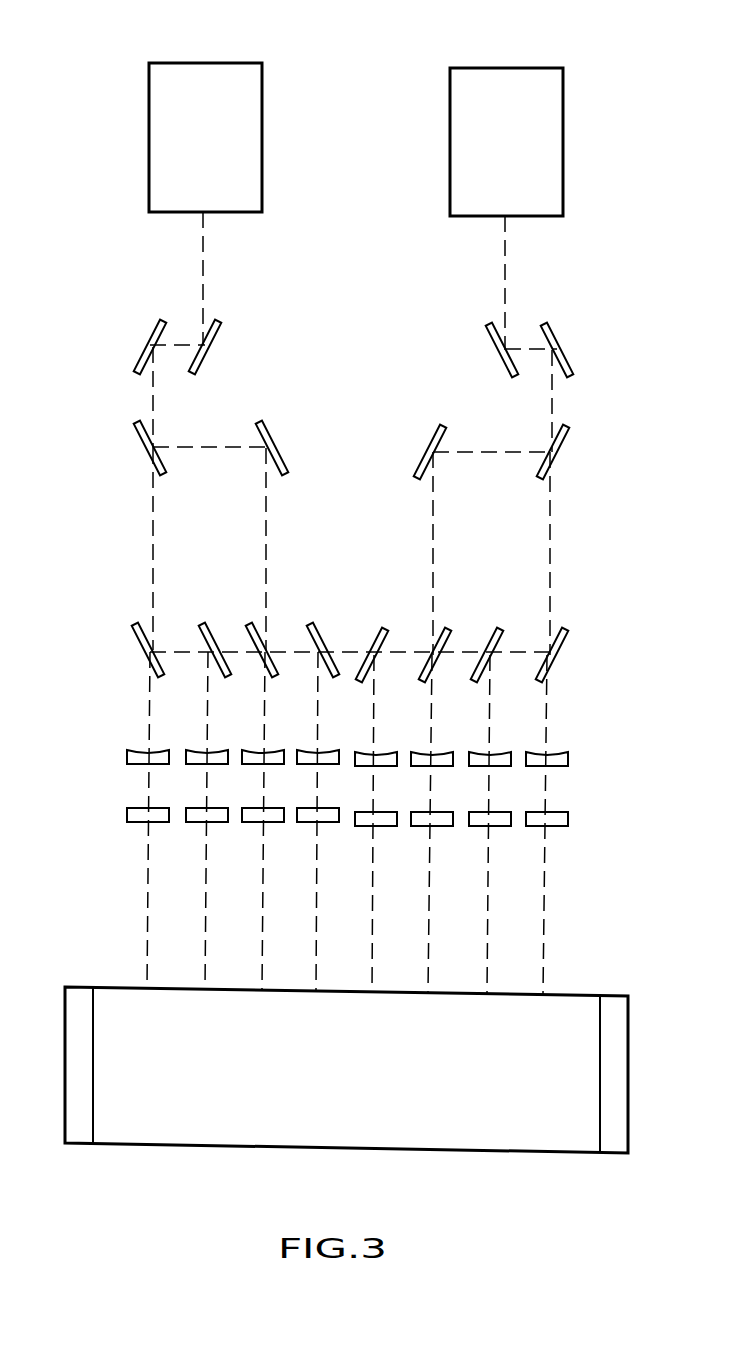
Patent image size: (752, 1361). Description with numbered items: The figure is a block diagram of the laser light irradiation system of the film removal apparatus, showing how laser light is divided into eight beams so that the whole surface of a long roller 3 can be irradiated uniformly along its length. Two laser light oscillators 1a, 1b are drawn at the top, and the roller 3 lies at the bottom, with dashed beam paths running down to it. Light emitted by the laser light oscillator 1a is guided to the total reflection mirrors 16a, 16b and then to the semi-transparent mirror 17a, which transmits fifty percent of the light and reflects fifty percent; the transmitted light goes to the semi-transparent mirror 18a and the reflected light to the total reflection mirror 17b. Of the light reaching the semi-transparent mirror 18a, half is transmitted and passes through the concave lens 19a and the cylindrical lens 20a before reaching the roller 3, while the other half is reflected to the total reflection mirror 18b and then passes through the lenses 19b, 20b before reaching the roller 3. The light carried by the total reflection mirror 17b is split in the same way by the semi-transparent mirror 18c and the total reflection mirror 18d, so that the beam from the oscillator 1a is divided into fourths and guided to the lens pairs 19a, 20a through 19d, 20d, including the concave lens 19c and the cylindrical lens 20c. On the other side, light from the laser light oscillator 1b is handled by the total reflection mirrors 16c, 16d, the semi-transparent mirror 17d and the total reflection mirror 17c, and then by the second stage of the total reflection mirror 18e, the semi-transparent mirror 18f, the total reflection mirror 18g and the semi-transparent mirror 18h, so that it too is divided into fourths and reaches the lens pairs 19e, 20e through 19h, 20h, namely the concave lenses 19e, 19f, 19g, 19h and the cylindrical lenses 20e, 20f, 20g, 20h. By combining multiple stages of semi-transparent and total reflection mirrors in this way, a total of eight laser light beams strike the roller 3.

The laser light oscillator 1a is at (520, 68).
The laser light oscillator 1b is at (193, 63).
The roller 3 is at (628, 1089).
The total reflection mirror 16a is at (568, 357).
The total reflection mirror 16b is at (492, 337).
The total reflection mirror 16c is at (212, 335).
The total reflection mirror 16d is at (140, 350).
The semi-transparent mirror 17a is at (567, 447).
The total reflection mirror 17b is at (440, 430).
The total reflection mirror 17c is at (267, 428).
The semi-transparent mirror 17d is at (140, 445).
The semi-transparent mirror 18a is at (566, 647).
The total reflection mirror 18b is at (492, 630).
The semi-transparent mirror 18c is at (447, 642).
The total reflection mirror 18d is at (380, 630).
The total reflection mirror 18e is at (314, 625).
The semi-transparent mirror 18f is at (252, 642).
The total reflection mirror 18g is at (205, 625).
The semi-transparent mirror 18h is at (137, 636).
The concave lens 19a is at (560, 752).
The concave lens 19b is at (500, 752).
The concave lens 19c is at (418, 767).
The concave lens 19d is at (388, 752).
The concave lens 19e is at (308, 750).
The concave lens 19f is at (249, 765).
The concave lens 19g is at (196, 750).
The concave lens 19h is at (136, 750).
The cylindrical lens 20a is at (562, 827).
The cylindrical lens 20b is at (505, 827).
The cylindrical lens 20c is at (447, 827).
The cylindrical lens 20d is at (387, 827).
The cylindrical lens 20e is at (302, 823).
The cylindrical lens 20f is at (247, 823).
The cylindrical lens 20g is at (190, 823).
The cylindrical lens 20h is at (132, 823).